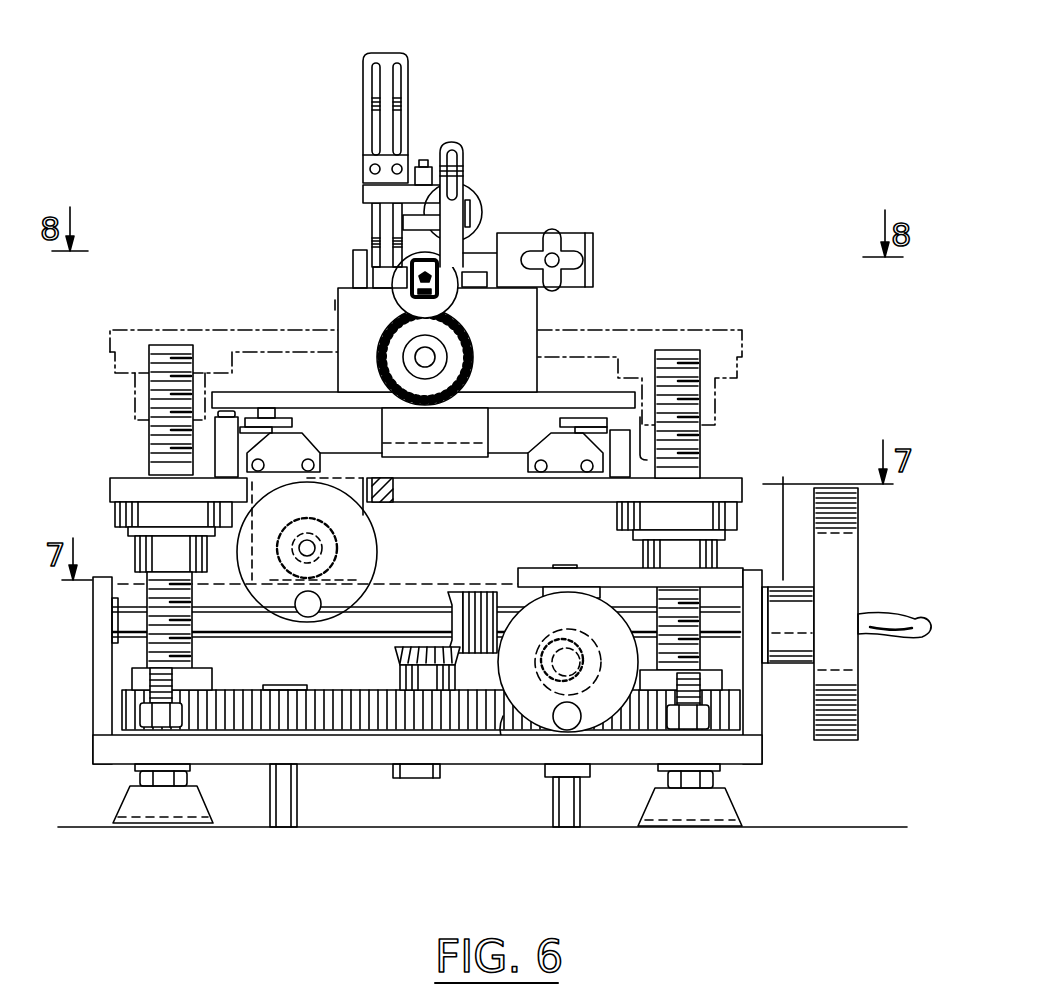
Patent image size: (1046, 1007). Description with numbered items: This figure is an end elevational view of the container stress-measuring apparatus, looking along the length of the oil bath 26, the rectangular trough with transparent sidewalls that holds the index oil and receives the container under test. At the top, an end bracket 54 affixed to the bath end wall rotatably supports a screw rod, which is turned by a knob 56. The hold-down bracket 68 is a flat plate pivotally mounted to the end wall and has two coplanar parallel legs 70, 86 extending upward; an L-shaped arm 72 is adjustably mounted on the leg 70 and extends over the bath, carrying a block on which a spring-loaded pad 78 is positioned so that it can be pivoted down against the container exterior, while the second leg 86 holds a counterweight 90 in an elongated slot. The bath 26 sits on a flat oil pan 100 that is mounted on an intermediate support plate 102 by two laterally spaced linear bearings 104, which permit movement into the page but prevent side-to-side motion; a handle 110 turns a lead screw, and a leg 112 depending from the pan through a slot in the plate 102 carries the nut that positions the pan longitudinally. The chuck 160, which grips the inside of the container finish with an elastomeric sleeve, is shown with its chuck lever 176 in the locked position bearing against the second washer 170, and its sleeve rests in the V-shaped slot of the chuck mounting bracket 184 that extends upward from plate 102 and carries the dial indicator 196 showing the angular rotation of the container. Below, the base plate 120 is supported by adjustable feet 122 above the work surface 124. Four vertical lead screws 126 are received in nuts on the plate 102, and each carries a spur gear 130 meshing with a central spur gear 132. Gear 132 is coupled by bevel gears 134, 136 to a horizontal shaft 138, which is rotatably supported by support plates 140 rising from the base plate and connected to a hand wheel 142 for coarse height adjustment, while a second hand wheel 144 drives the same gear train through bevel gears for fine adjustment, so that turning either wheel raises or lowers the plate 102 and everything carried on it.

The bath 26 is at (343, 253).
The end brackets 54 is at (570, 240).
The knob 56 is at (590, 234).
The hold-down bracket 68 is at (384, 149).
The leg 70 is at (362, 105).
The L-shaped arm 72 is at (368, 197).
The pad 78 is at (432, 221).
The second leg 86 is at (452, 145).
The counterweight 90 is at (474, 190).
The oil pan 100 is at (612, 402).
The intermediate support plate 102 is at (732, 328).
The linear bearings 104 is at (243, 441).
The handle 110 is at (358, 550).
The leg 112 is at (412, 543).
The base plate 120 is at (260, 750).
The adjustable feet 122 is at (177, 808).
The work surface 124 is at (875, 827).
The lead screws 126 is at (168, 642).
The spur gear 130 is at (133, 715).
The central spur gear 132 is at (503, 717).
The bevel gear 134 is at (397, 652).
The bevel gear 136 is at (477, 602).
The horizontal shaft 138 is at (398, 603).
The support plates 140 is at (97, 725).
The hand wheel 142 is at (848, 538).
The second hand wheel 144 is at (617, 713).
The chuck 160 is at (448, 354).
The second washer 170 is at (437, 283).
The chuck lever 176 is at (519, 289).
The chuck mounting bracket 184 is at (478, 432).
The dial indicator 196 is at (395, 356).